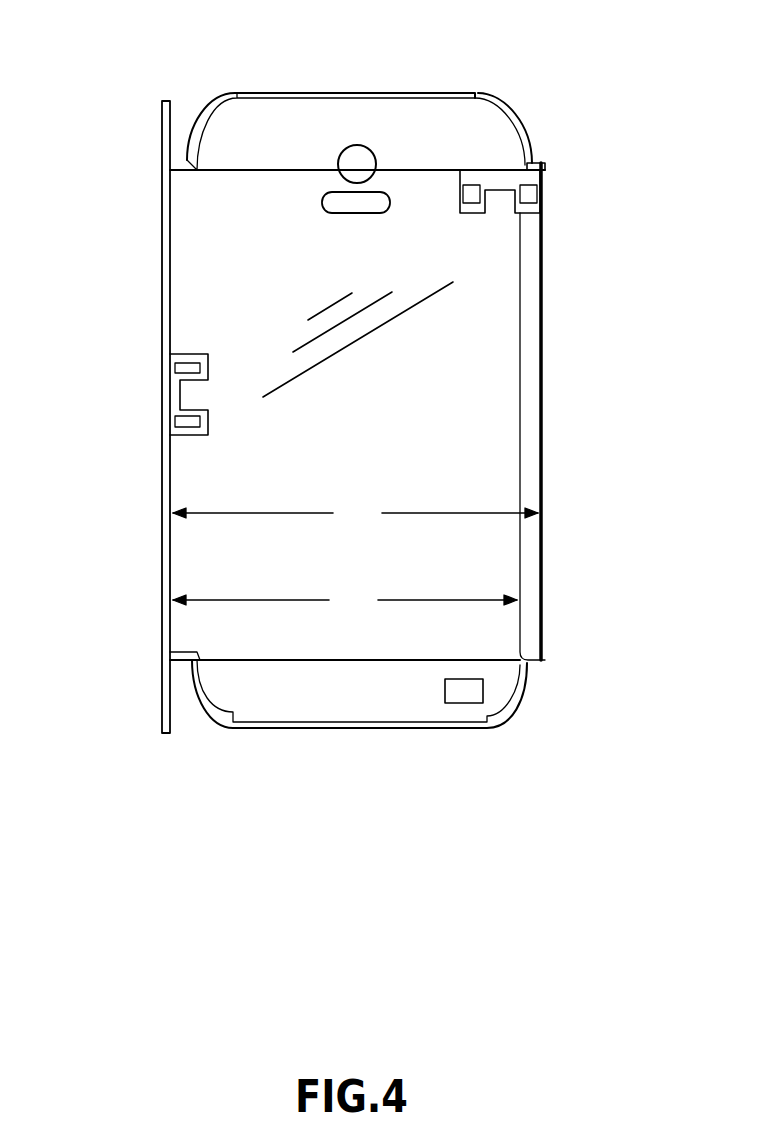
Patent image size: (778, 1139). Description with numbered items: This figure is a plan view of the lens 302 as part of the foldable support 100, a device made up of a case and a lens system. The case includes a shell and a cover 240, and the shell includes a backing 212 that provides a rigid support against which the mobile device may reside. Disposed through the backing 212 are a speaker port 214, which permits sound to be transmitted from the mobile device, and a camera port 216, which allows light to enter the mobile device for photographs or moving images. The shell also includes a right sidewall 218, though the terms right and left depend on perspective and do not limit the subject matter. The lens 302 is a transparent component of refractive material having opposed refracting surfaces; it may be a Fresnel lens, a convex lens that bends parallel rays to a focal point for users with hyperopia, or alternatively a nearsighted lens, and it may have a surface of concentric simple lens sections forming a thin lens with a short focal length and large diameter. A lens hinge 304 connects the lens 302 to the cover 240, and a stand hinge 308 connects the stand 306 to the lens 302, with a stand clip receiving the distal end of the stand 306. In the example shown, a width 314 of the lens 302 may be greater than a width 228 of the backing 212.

The foldable support 100 is at (158, 555).
The backing 212 is at (290, 703).
The speaker port 214 is at (463, 703).
The camera port 216 is at (352, 146).
The right sidewall 218 is at (493, 96).
The width of the backing 228 is at (345, 600).
The cover 240 is at (162, 245).
The lens 302 is at (497, 437).
The lens hinge 304 is at (180, 393).
The stand 306 is at (520, 276).
The stand hinge 308 is at (543, 183).
The width of the lens 314 is at (355, 513).